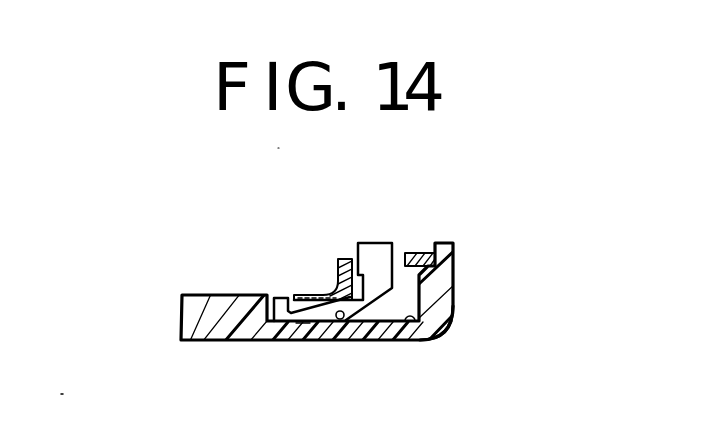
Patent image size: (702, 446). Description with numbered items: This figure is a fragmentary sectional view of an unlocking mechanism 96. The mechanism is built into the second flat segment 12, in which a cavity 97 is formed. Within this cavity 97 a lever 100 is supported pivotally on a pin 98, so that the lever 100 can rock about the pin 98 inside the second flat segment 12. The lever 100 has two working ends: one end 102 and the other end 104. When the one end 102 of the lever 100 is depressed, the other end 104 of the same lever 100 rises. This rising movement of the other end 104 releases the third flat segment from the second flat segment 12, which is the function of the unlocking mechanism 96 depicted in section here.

The second flat segment 12 is at (454, 316).
The unlocking mechanism 96 is at (339, 251).
The cavity 97 is at (430, 342).
The pin 98 is at (344, 320).
The lever 100 is at (300, 322).
The one end of the lever 102 is at (375, 242).
The other end of the lever 104 is at (281, 296).